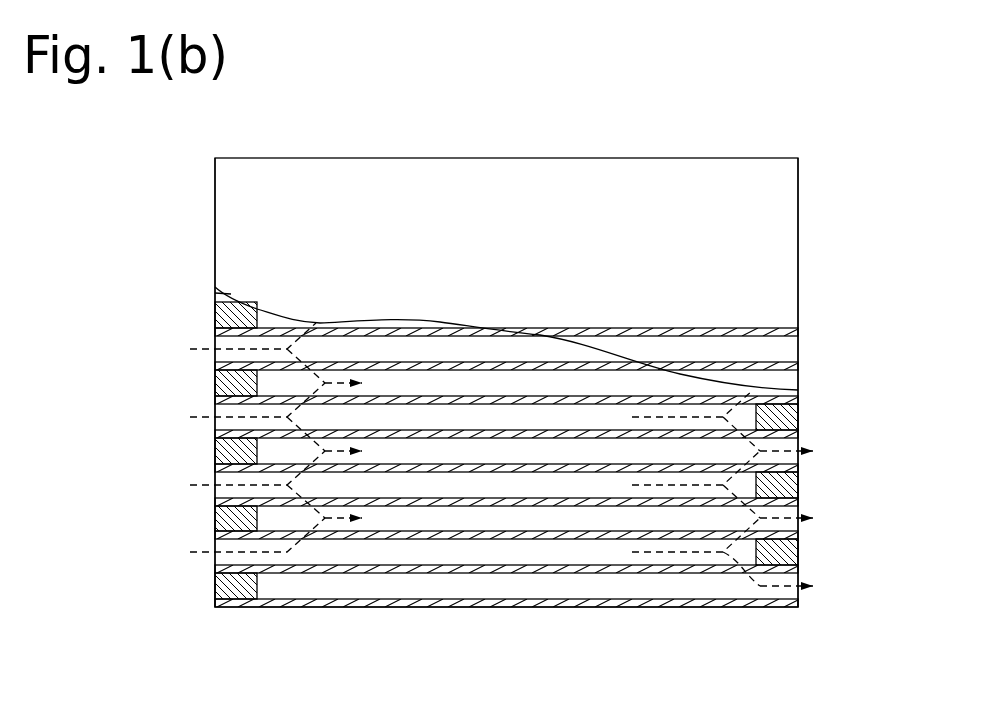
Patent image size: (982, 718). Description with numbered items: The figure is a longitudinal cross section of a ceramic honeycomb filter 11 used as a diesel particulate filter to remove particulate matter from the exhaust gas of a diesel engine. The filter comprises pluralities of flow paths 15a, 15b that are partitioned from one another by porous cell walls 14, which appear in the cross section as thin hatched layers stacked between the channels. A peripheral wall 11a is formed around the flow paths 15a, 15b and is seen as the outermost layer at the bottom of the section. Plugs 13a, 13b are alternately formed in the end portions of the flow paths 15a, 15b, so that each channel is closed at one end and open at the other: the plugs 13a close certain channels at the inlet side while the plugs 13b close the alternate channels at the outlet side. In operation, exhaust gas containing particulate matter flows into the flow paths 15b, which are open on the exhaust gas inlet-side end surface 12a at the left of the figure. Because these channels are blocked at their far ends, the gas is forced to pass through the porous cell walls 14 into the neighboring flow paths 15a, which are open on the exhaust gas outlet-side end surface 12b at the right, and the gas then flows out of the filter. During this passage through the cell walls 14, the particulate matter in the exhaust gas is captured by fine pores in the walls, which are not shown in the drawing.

The ceramic honeycomb filter 11 is at (187, 165).
The peripheral wall 11a is at (447, 602).
The exhaust gas inlet-side end surface 12a is at (215, 241).
The exhaust gas outlet-side end surface 12b is at (798, 263).
The plug 13a is at (232, 516).
The plug 13b is at (780, 483).
The porous cell wall 14 is at (370, 567).
The flow path 15a is at (530, 515).
The flow path 15b is at (603, 483).